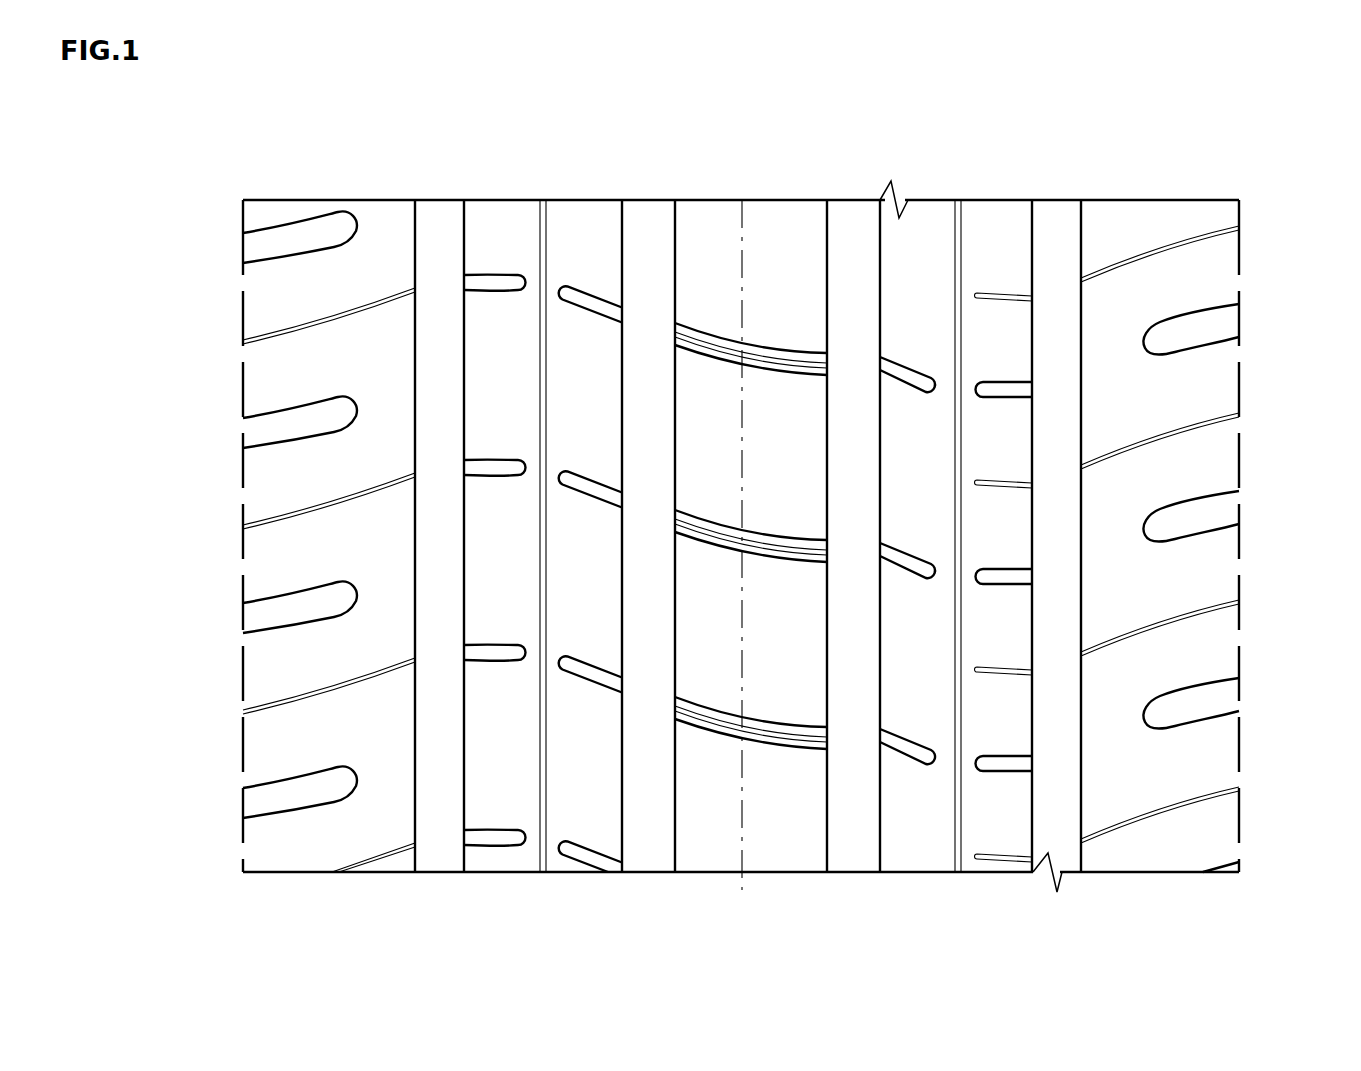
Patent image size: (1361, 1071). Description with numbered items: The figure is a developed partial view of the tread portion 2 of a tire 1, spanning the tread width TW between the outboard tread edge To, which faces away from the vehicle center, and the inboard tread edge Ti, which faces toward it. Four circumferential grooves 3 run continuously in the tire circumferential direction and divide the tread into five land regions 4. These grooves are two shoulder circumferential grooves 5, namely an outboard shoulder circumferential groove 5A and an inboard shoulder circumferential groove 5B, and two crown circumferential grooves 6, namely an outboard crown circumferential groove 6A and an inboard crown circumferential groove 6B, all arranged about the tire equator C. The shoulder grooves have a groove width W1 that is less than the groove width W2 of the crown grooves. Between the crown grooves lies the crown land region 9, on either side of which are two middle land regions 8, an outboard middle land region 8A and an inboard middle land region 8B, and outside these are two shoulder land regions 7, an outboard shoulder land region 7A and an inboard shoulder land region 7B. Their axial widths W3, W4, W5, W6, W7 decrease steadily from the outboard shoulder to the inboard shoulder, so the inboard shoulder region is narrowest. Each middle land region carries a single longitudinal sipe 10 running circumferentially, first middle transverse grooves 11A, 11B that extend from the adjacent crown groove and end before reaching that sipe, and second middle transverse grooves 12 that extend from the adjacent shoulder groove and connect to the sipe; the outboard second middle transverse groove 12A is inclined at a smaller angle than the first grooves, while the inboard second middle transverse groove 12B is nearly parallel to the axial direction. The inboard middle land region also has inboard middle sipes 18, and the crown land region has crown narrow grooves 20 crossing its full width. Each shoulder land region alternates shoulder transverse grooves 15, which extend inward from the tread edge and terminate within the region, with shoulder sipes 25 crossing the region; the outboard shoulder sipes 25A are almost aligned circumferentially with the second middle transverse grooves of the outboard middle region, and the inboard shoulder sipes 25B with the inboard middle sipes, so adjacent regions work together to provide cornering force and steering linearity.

The tire 1 is at (1033, 190).
The tread portion 2 is at (475, 190).
The circumferential grooves 3 is at (643, 247).
The land regions 4 is at (778, 238).
The shoulder circumferential grooves 5 is at (438, 245).
The outboard shoulder circumferential groove 5A is at (438, 385).
The inboard shoulder circumferential groove 5B is at (1052, 392).
The crown circumferential grooves 6 is at (652, 217).
The outboard crown circumferential groove 6A is at (645, 378).
The inboard crown circumferential groove 6B is at (850, 352).
The shoulder land regions 7 is at (288, 278).
The outboard shoulder land region 7A is at (345, 275).
The inboard shoulder land region 7B is at (1130, 240).
The middle land regions 8 is at (498, 245).
The outboard middle land region 8A is at (573, 245).
The inboard middle land region 8B is at (990, 235).
The crown land region 9 is at (713, 240).
The longitudinal sipe 10 is at (543, 558).
The first middle transverse grooves in the outboard middle land region 11A is at (590, 490).
The first middle transverse grooves in the inboard middle land region 11B is at (912, 565).
The second middle transverse grooves 12 is at (342, 770).
The second middle transverse groove in the outboard middle land region 12A is at (493, 467).
The second middle transverse groove in the inboard middle land region 12B is at (1010, 573).
The shoulder transverse grooves 15 is at (297, 612).
The inboard middle sipes 18 is at (1005, 668).
The crown narrow grooves 20 is at (778, 730).
The shoulder sipes 25 is at (307, 510).
The shoulder sipes in the outboard shoulder land region 25A is at (303, 698).
The shoulder sipes in the inboard shoulder land region 25B is at (1175, 620).
The tire equator C is at (742, 520).
The tread width TW is at (1239, 200).
The outboard tread edge To is at (243, 213).
The inboard tread edge Ti is at (1239, 213).
The groove width of the shoulder circumferential grooves W1 is at (380, 802).
The groove width of the crown circumferential grooves W2 is at (622, 802).
The width of the outboard shoulder land region W3 is at (243, 872).
The width of the outboard middle land region W4 is at (464, 872).
The width of the crown land region W5 is at (675, 872).
The width of the inboard middle land region W6 is at (880, 872).
The width of the inboard shoulder land region W7 is at (1081, 872).